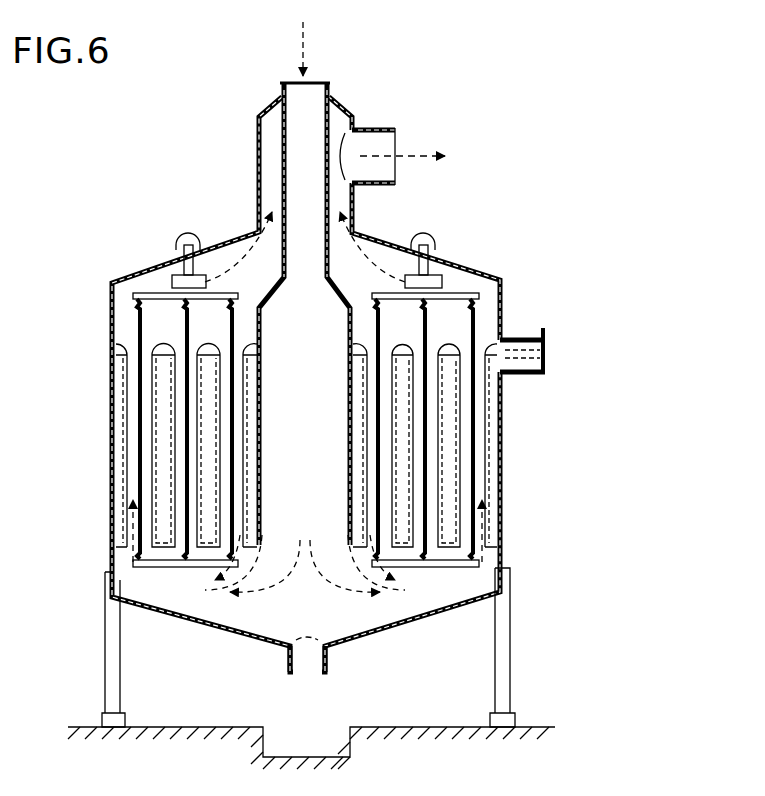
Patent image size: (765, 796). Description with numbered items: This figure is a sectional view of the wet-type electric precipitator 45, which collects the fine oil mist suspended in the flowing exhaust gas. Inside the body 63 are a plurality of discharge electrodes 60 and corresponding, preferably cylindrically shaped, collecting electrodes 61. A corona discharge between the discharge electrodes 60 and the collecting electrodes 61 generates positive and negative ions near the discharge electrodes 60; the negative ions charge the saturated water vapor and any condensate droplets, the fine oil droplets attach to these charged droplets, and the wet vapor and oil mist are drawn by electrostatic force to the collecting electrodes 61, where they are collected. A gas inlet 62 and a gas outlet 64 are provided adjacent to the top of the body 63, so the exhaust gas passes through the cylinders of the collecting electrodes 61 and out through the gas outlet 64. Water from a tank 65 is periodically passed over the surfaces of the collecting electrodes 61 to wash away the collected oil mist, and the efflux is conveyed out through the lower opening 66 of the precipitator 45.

The wet-type electric precipitator 45 is at (425, 87).
The discharge electrodes 60 is at (140, 330).
The collecting electrodes 61 is at (125, 398).
The gas inlet 62 is at (296, 82).
The body 63 is at (218, 246).
The gas outlet 64 is at (398, 140).
The tank 65 is at (533, 357).
The lower opening 66 is at (308, 665).